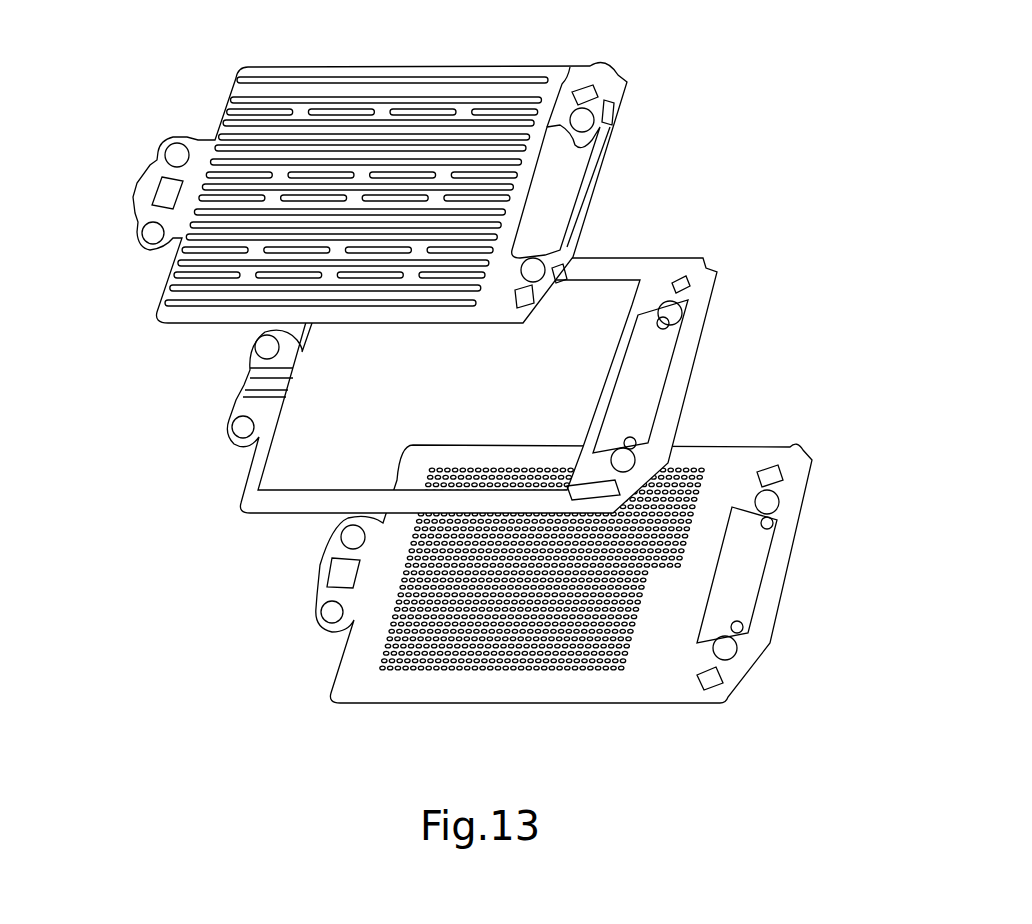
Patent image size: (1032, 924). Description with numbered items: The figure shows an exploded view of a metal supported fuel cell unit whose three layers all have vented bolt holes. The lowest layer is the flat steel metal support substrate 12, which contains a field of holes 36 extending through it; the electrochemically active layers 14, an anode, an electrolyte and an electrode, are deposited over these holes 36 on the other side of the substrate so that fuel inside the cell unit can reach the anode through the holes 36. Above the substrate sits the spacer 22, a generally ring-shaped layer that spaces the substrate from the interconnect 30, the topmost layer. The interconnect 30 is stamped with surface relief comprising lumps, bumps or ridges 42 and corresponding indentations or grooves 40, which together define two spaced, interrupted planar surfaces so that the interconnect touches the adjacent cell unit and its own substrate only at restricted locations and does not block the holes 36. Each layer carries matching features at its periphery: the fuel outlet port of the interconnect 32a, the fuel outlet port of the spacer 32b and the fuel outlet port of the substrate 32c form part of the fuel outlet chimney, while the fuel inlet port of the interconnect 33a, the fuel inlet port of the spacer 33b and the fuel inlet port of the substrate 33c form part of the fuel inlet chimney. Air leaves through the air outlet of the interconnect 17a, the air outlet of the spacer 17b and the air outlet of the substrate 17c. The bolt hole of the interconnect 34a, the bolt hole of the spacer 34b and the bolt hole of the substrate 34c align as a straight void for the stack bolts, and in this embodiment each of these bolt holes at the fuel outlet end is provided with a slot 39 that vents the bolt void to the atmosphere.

The metal support substrate 12 is at (770, 597).
The electrochemically active layers 14 is at (578, 672).
The air outlet of interconnect 17a is at (548, 227).
The air outlet of spacer 17b is at (650, 373).
The air outlet of substrate 17c is at (745, 565).
The spacer 22 is at (693, 378).
The interconnect 30 is at (236, 65).
The fuel outlet port of interconnect 32a is at (590, 93).
The fuel outlet port of spacer 32b is at (672, 283).
The fuel outlet port of substrate 32c is at (768, 472).
The fuel inlet port of interconnect 33a is at (165, 192).
The fuel inlet port of spacer 33b is at (250, 390).
The fuel inlet port of substrate 33c is at (332, 573).
The bolt hole of interconnect 34a is at (177, 155).
The bolt hole of spacer 34b is at (267, 347).
The bolt hole of substrate 34c is at (353, 537).
The holes 36 is at (455, 655).
The slot 39 is at (608, 113).
The indentations or grooves 40 is at (517, 197).
The lumps or bumps or ridges 42 is at (570, 66).